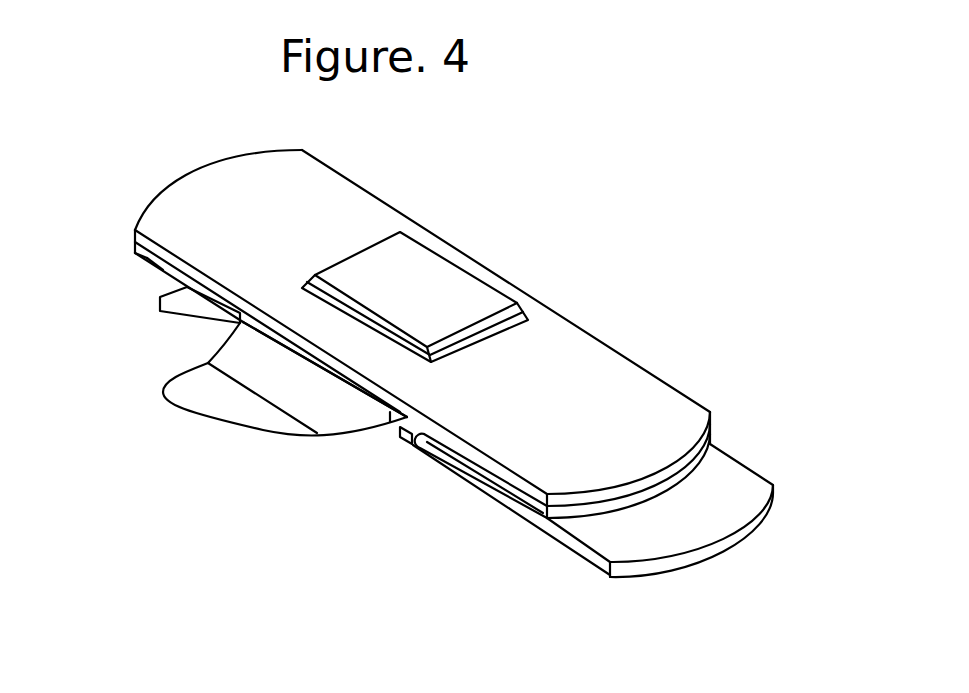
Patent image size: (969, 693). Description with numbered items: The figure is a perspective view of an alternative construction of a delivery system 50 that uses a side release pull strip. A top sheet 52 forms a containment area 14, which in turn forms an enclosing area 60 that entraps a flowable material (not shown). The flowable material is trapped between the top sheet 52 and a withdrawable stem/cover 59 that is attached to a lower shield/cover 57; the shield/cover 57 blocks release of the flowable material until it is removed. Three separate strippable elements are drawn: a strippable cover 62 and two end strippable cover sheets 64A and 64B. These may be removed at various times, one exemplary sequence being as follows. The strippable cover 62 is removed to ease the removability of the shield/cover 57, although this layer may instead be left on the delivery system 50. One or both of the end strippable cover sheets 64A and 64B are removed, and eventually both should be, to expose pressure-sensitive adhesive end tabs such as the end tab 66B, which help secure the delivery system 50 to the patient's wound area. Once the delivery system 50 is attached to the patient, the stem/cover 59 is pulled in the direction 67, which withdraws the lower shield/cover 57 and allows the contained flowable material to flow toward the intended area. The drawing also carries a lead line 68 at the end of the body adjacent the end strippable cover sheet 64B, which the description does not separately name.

The delivery system 50 is at (697, 305).
The top sheet 52 is at (307, 168).
The enclosing area 60 is at (135, 233).
The end strippable cover sheet 64A is at (145, 255).
The containment area 14 is at (410, 258).
The withdrawable stem/cover 59 is at (183, 397).
The lower shield/cover 57 is at (347, 383).
The strippable cover 62 is at (401, 436).
The pressure-sensitive adhesive end tab 66B is at (560, 515).
The end strippable cover sheet 64B is at (743, 480).
The end edge 68 is at (710, 430).
The pulling direction 67 is at (198, 467).